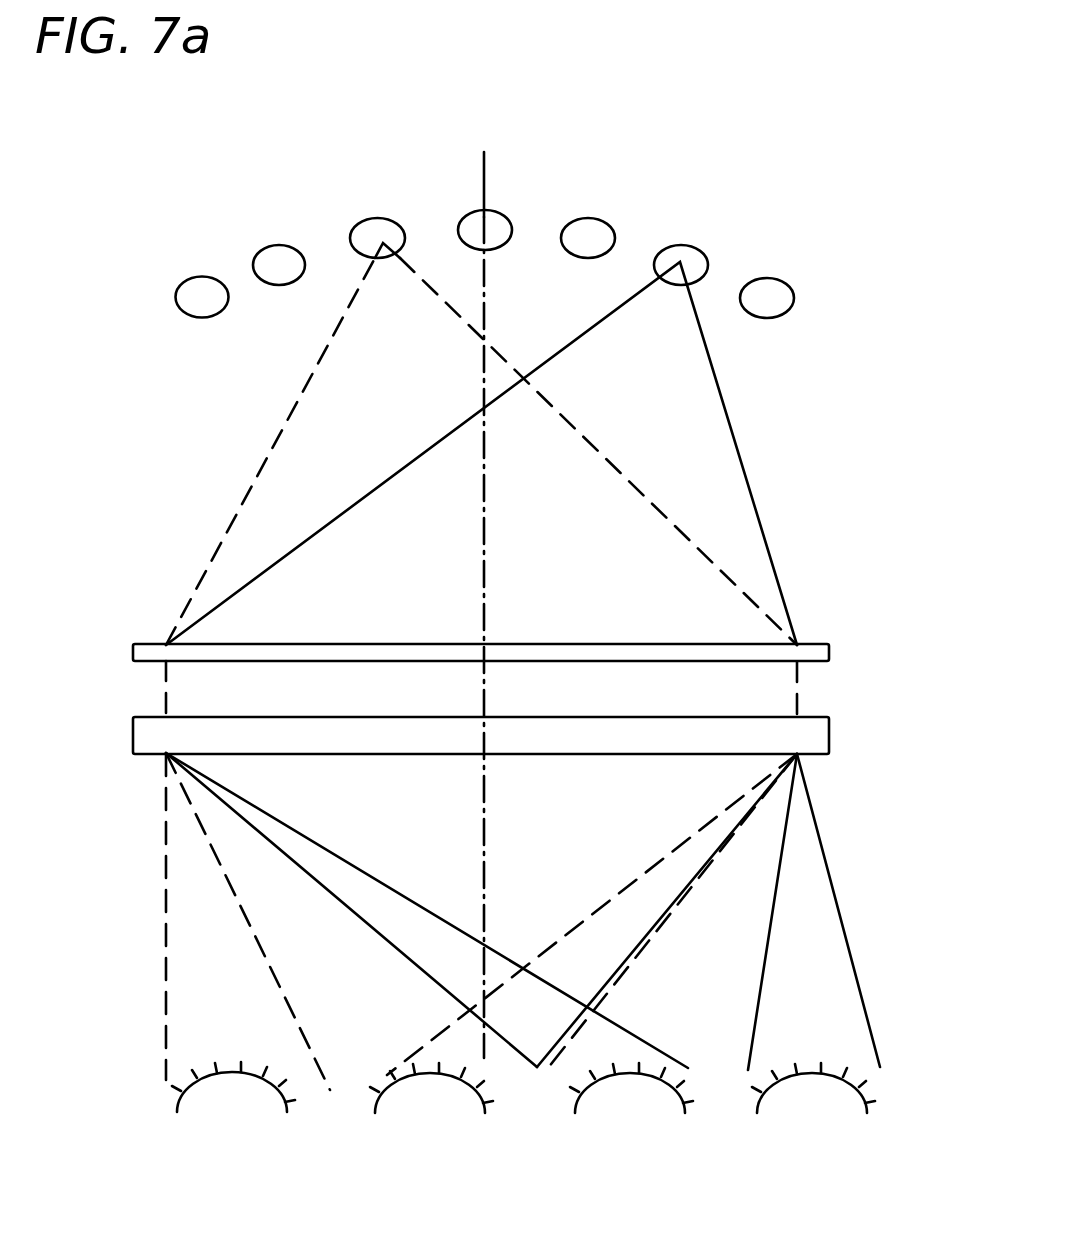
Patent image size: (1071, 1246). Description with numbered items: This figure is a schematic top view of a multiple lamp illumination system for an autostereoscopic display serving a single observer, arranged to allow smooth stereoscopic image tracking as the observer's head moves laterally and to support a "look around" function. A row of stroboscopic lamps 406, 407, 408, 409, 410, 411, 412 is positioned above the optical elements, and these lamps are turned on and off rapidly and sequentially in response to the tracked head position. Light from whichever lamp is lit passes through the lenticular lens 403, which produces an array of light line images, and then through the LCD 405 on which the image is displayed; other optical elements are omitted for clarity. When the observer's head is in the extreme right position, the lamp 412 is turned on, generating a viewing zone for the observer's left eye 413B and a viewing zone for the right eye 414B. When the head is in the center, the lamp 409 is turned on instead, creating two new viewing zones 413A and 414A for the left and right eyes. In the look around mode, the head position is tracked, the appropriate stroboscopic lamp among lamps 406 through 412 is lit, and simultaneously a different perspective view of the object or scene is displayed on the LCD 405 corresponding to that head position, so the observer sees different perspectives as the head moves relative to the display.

The lenticular lens 403 is at (820, 645).
The LCD 405 is at (829, 738).
The stroboscopic lamp 406 is at (766, 282).
The stroboscopic lamp 407 is at (288, 250).
The stroboscopic lamp 408 is at (396, 220).
The stroboscopic lamp 409 is at (497, 212).
The stroboscopic lamp 410 is at (585, 220).
The stroboscopic lamp 411 is at (672, 248).
The stroboscopic lamp 412 is at (201, 287).
The left eye viewing zone 413A is at (268, 1068).
The right eye viewing zone 414A is at (455, 1075).
The left eye viewing zone 413B is at (598, 1073).
The right eye viewing zone 414B is at (837, 1030).